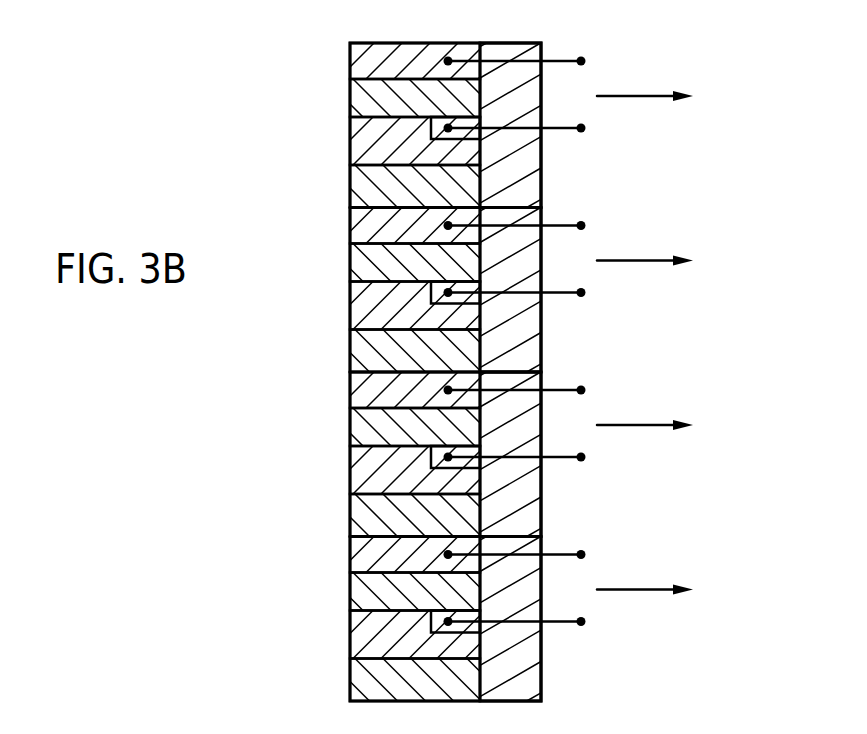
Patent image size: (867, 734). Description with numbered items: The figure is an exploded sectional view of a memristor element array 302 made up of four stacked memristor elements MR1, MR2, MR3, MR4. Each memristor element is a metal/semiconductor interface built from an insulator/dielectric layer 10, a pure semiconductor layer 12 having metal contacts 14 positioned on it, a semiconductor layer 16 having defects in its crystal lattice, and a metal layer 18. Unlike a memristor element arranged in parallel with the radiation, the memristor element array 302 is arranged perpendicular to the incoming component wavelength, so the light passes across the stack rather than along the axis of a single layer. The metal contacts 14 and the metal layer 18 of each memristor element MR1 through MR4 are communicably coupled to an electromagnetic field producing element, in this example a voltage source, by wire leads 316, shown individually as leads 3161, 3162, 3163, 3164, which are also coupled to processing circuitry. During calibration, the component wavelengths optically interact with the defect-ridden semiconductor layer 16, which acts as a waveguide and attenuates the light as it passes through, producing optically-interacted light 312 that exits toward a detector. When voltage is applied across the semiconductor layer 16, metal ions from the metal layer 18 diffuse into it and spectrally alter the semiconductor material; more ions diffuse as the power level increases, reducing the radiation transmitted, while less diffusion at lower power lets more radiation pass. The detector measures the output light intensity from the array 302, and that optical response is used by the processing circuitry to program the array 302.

The insulator/dielectric layer 10 is at (378, 147).
The pure semiconductor layer 12 is at (383, 107).
The metal contacts 14 is at (386, 374).
The semiconductor layer having defects 16 is at (372, 344).
The metal layer 18 is at (381, 306).
The memristor element array 302 is at (216, 133).
The optically-interacted light 312 is at (638, 52).
The leads 316 is at (559, 315).
The lead 3161 is at (568, 77).
The lead 3162 is at (559, 234).
The lead 3163 is at (559, 398).
The lead 3164 is at (559, 563).
The memristor element MR1 is at (603, 152).
The memristor element MR2 is at (603, 317).
The memristor element MR3 is at (603, 481).
The memristor element MR4 is at (603, 646).